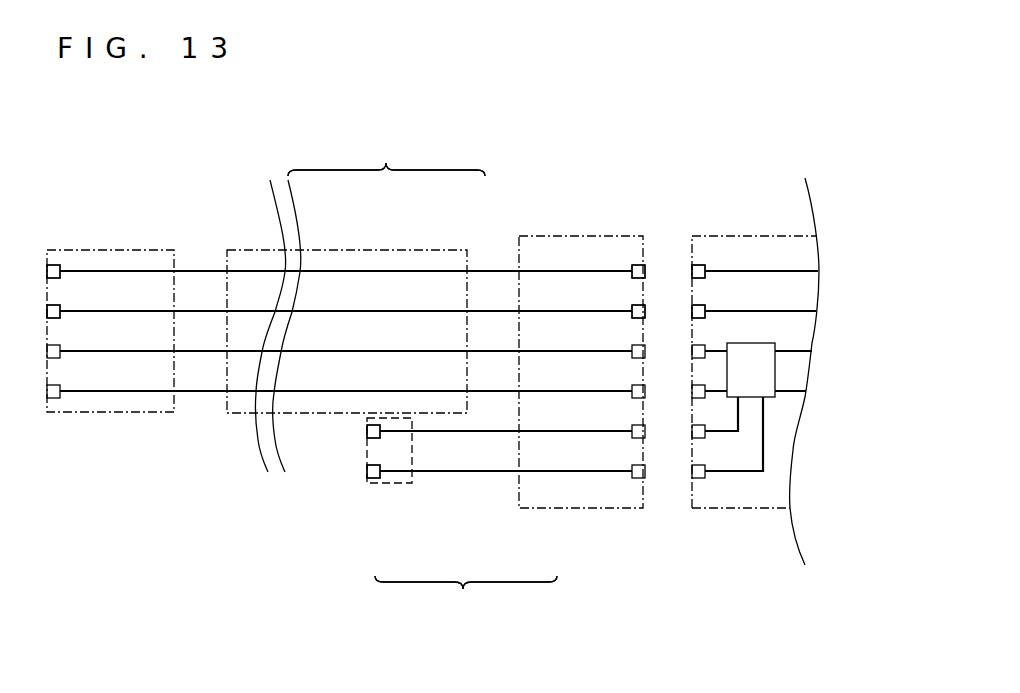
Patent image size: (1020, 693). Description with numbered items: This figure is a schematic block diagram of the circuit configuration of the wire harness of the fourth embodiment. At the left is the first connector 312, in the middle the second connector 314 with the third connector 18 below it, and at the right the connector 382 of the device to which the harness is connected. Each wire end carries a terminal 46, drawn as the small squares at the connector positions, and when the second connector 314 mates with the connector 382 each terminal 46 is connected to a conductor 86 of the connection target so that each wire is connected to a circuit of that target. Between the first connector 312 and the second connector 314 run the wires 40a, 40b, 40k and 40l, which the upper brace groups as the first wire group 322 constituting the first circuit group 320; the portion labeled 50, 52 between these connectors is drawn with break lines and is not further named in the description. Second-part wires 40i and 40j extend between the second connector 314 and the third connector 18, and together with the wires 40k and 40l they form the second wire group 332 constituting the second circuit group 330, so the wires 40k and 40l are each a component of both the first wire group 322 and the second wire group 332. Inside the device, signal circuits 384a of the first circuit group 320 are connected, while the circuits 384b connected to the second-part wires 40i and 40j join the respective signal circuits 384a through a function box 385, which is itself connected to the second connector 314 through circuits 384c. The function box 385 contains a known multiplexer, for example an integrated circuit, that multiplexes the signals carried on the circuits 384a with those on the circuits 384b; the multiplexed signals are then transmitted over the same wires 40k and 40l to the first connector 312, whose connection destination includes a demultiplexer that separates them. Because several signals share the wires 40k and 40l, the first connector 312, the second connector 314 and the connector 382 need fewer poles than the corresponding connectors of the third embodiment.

The first connector 312 is at (92, 413).
The cable 50 is at (240, 413).
The cable 52 is at (277, 326).
The second connector 314 is at (603, 510).
The third connector 18 is at (373, 485).
The connector of the device 382 is at (731, 510).
The function box 385 is at (760, 343).
The signal circuits 384a is at (780, 391).
The circuits 384b is at (763, 432).
The circuits 384c is at (717, 391).
The wire 40a is at (322, 267).
The wire 40b is at (335, 310).
The wire 40k is at (360, 350).
The wire 40l is at (377, 390).
The second-part wire 40j is at (487, 432).
The second-part wire 40i is at (507, 471).
The first wire group 322 is at (386, 156).
The first circuit group 320 is at (386, 169).
The second wire group 332 is at (466, 595).
The second circuit group 330 is at (466, 582).
The terminal 46 is at (50, 305).
The conductor 86 is at (698, 303).